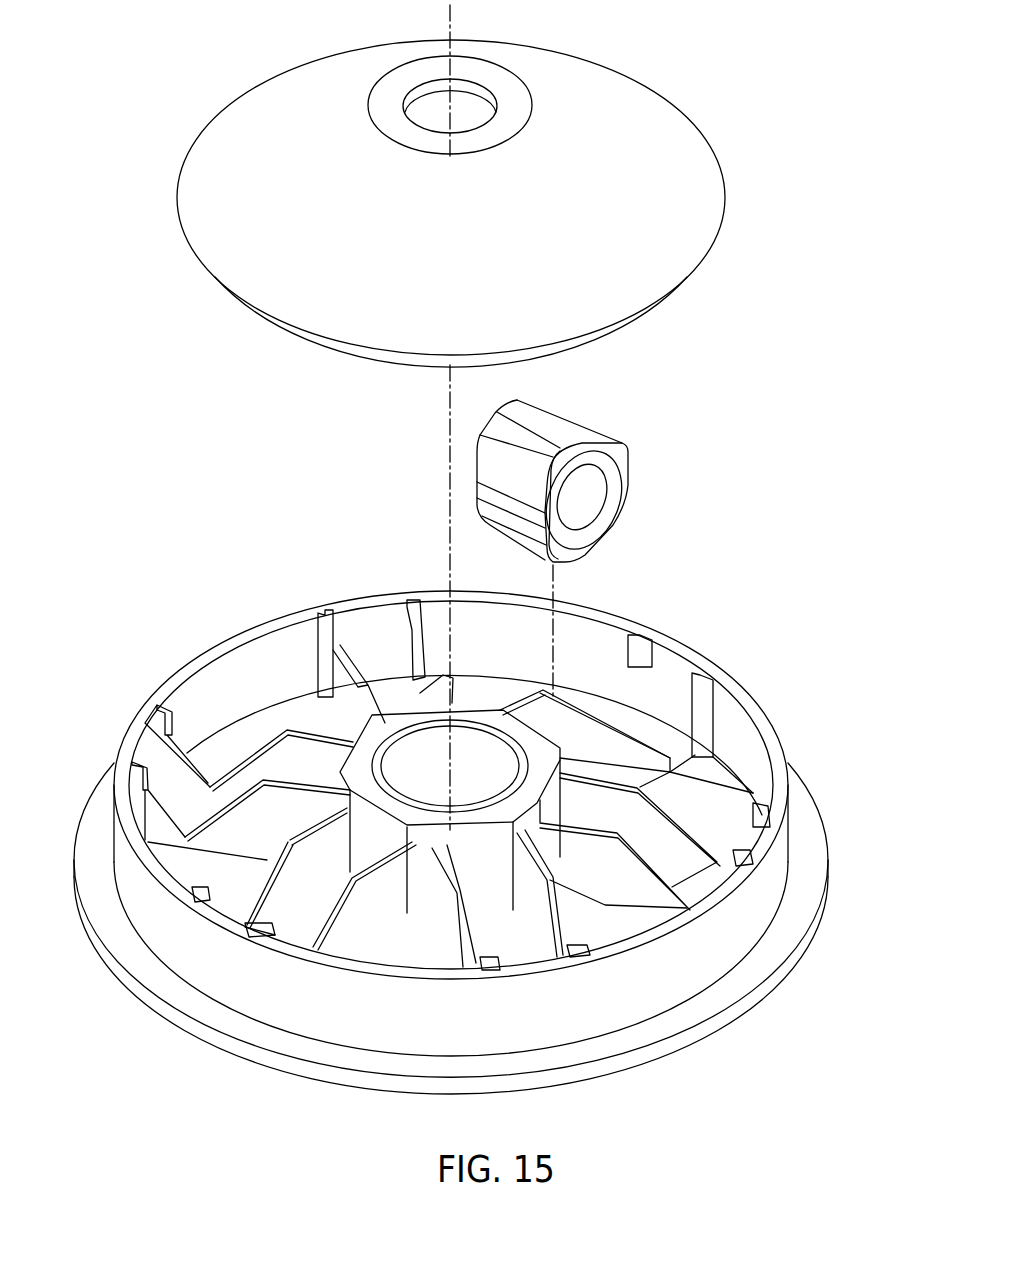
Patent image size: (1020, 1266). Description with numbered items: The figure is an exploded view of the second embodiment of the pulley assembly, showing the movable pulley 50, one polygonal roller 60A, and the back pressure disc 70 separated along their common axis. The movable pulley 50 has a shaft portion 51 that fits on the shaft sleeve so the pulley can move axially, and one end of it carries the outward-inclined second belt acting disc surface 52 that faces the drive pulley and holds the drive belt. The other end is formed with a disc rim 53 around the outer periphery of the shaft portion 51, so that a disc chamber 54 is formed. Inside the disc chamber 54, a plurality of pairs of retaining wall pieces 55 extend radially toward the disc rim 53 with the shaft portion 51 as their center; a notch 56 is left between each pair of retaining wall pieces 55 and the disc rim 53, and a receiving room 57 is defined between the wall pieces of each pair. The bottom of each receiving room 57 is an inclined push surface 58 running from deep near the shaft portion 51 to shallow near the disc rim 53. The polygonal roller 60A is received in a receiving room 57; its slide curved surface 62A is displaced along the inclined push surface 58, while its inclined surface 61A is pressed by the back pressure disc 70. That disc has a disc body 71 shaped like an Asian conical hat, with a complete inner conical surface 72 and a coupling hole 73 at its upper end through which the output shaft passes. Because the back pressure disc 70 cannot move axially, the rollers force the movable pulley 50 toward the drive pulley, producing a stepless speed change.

The movable pulley 50 is at (147, 997).
The shaft portion 51 is at (340, 722).
The second belt acting disc surface 52 is at (267, 1067).
The disc rim 53 is at (203, 652).
The disc chamber 54 is at (220, 695).
The retaining wall pieces 55 is at (518, 695).
The notch 56 is at (643, 735).
The receiving room 57 is at (573, 723).
The inclined push surface 58 is at (660, 667).
The polygonal roller 60A is at (635, 465).
The inclined surface 61A is at (580, 430).
The slide curved surface 62A is at (602, 523).
The back pressure disc 70 is at (668, 92).
The disc body 71 is at (648, 206).
The inner conical surface 72 is at (306, 338).
The coupling hole 73 is at (470, 95).